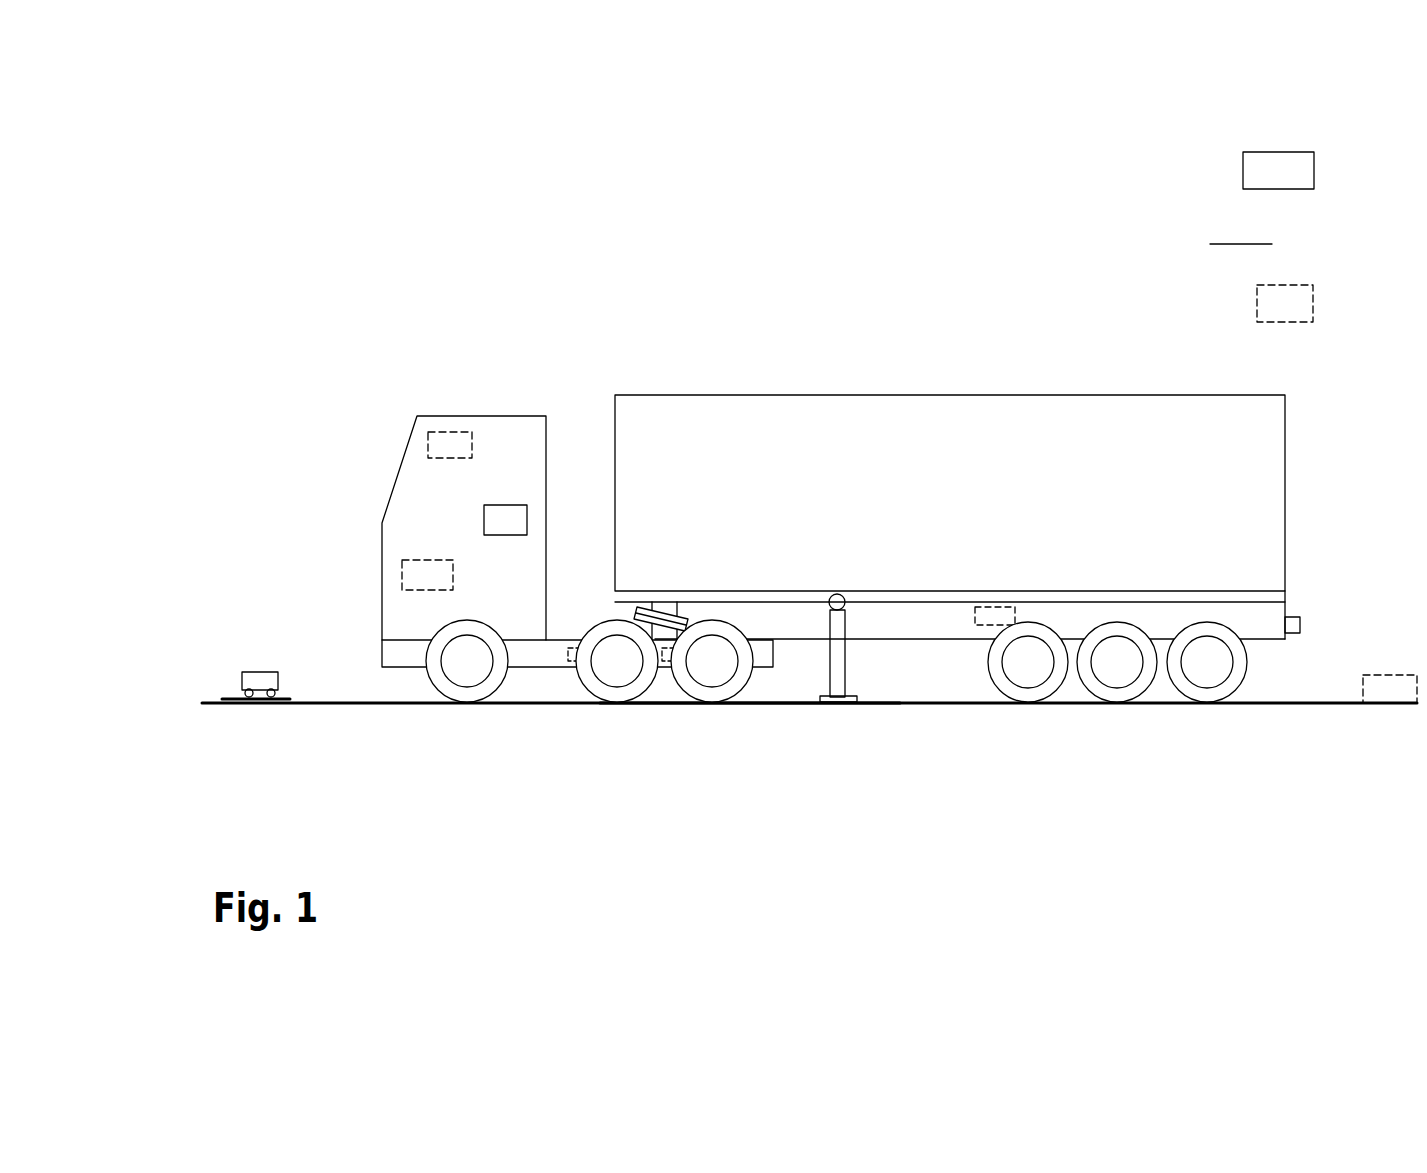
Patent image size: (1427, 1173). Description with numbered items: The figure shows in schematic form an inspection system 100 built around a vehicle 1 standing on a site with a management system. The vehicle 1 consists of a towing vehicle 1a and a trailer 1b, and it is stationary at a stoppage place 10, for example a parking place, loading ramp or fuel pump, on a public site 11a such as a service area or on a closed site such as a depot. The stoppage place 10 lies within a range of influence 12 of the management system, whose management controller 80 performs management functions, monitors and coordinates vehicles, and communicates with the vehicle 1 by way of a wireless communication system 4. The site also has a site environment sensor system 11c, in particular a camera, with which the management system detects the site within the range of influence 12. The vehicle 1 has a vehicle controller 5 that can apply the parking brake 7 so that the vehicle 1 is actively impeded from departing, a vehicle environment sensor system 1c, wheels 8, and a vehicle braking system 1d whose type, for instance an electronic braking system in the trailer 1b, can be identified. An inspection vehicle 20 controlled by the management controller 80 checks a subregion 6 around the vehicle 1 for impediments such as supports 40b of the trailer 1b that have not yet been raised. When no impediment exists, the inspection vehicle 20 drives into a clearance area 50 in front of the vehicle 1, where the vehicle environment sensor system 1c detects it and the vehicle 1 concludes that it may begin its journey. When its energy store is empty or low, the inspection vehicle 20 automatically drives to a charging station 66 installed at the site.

The inspection system 100 is at (230, 382).
The vehicle 1 is at (430, 350).
The towing vehicle 1a is at (400, 467).
The trailer 1b is at (1287, 488).
The vehicle environment sensor system 1c is at (440, 437).
The vehicle braking system 1d is at (410, 573).
The vehicle controller 5 is at (510, 515).
The parking brake 7 is at (640, 637).
The wheels 8 is at (467, 672).
The supports 40b is at (993, 640).
The subregion 6 is at (1165, 692).
The inspection vehicle 20 is at (243, 681).
The clearance area 50 is at (258, 705).
The stoppage place 10 is at (295, 622).
The public site 11a is at (220, 740).
The range of influence 12 is at (910, 258).
The wireless communication system 4 is at (1173, 247).
The management controller 80 is at (1258, 168).
The site environment sensor system 11c is at (1297, 317).
The charging station 66 is at (1380, 678).